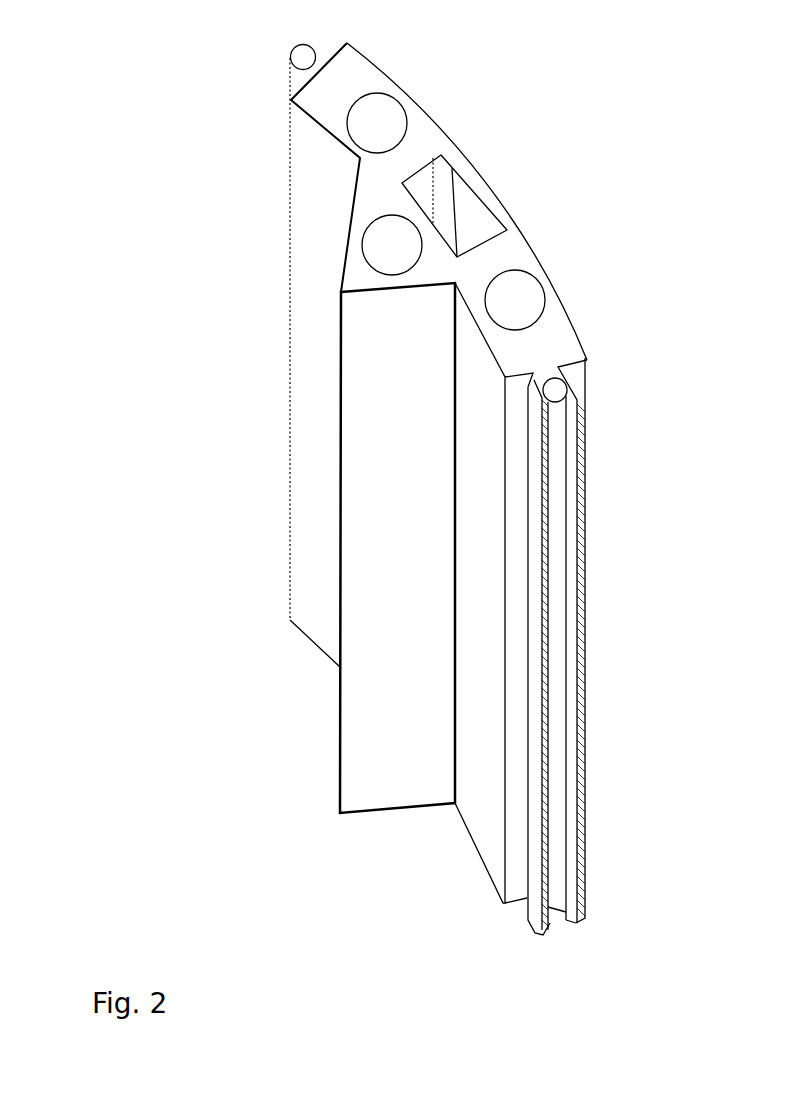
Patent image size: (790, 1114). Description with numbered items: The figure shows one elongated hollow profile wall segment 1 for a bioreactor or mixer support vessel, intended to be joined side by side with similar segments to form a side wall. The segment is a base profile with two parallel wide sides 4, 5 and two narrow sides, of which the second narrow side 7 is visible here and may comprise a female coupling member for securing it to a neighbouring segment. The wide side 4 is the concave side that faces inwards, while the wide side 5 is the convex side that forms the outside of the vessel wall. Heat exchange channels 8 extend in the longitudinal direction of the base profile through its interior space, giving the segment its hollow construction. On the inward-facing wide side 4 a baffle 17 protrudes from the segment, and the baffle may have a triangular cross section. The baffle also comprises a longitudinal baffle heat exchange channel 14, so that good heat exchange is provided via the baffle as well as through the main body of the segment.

The wall segment 1 is at (148, 460).
The wide side 4 is at (333, 132).
The wide side 5 is at (476, 182).
The second narrow side 7 is at (586, 595).
The heat exchange channel 8 is at (380, 127).
The baffle heat exchange channel 14 is at (397, 243).
The baffle 17 is at (343, 367).